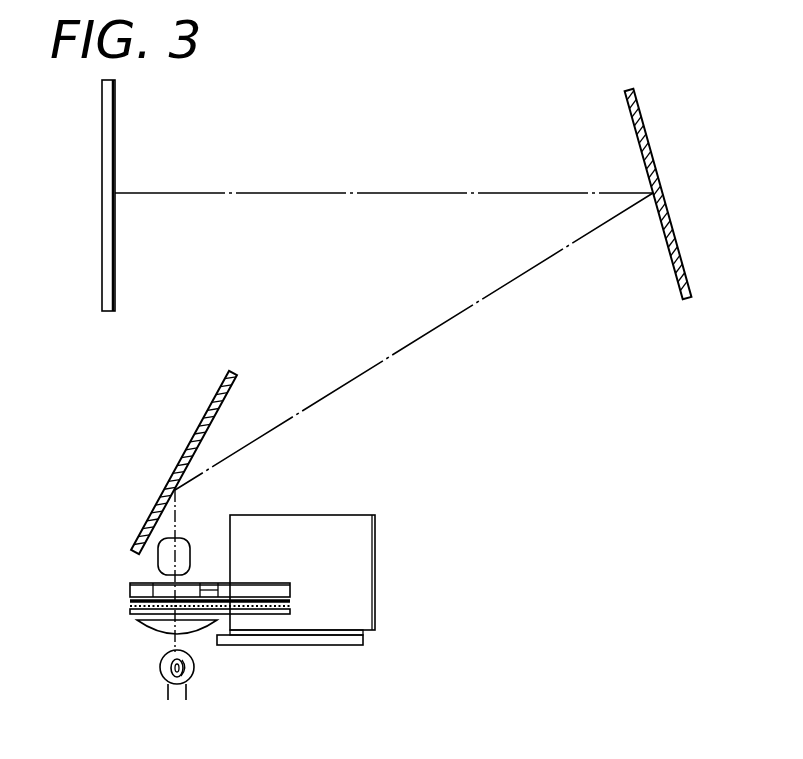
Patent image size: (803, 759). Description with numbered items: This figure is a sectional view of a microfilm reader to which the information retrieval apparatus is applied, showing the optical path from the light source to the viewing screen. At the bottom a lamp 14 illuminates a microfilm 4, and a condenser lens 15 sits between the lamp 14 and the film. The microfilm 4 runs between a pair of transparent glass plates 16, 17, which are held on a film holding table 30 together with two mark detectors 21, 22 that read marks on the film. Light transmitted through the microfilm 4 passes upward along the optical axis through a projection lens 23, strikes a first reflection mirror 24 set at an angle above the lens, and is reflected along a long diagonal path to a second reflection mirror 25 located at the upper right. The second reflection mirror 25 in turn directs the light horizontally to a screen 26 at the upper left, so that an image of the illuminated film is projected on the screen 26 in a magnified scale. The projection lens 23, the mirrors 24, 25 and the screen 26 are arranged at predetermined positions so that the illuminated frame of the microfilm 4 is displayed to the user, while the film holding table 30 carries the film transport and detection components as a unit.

The screen 26 is at (102, 155).
The second reflection mirror 25 is at (660, 175).
The first reflection mirror 24 is at (201, 423).
The projection lens 23 is at (184, 539).
The mark detector 22 is at (209, 587).
The mark detector 21 is at (140, 584).
The transparent glass plate 17 is at (130, 601).
The microfilm 4 is at (130, 607).
The transparent glass plate 16 is at (132, 613).
The condenser lens 15 is at (159, 633).
The lamp 14 is at (194, 666).
The film holding table 30 is at (325, 522).